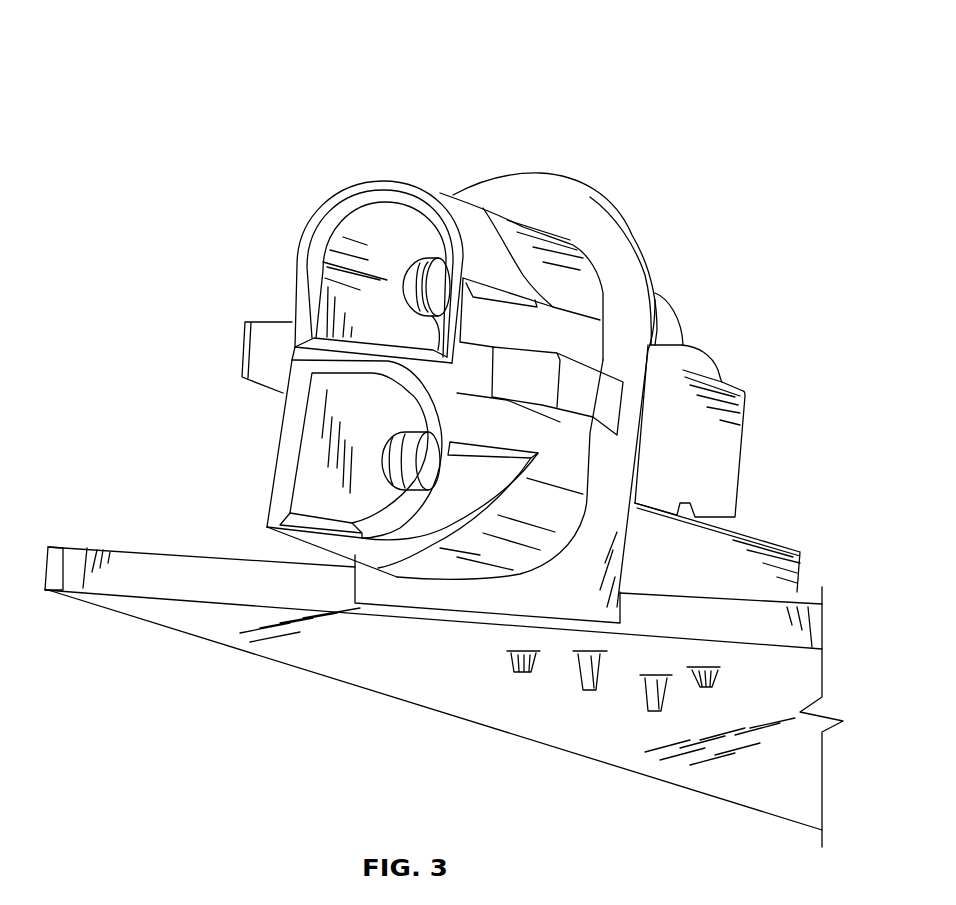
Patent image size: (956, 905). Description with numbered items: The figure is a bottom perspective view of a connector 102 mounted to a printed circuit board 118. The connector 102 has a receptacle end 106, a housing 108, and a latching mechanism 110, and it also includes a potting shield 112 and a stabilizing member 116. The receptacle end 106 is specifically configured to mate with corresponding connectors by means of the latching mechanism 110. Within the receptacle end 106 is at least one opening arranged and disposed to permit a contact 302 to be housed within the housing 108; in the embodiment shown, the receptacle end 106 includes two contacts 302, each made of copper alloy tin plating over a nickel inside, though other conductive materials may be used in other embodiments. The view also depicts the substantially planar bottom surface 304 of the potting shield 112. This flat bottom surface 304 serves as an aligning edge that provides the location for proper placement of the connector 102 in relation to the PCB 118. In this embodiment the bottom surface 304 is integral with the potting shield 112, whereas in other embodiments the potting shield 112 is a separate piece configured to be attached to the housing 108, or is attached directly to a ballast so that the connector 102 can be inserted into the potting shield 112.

The connector 102 is at (253, 52).
The receptacle end 106 is at (443, 376).
The housing 108 is at (670, 320).
The latching mechanism 110 is at (577, 388).
The potting shield 112 is at (500, 184).
The stabilizing member 116 is at (780, 594).
The printed circuit board 118 is at (148, 562).
The contact 302 is at (403, 280).
The substantially planar bottom surface 304 is at (397, 593).